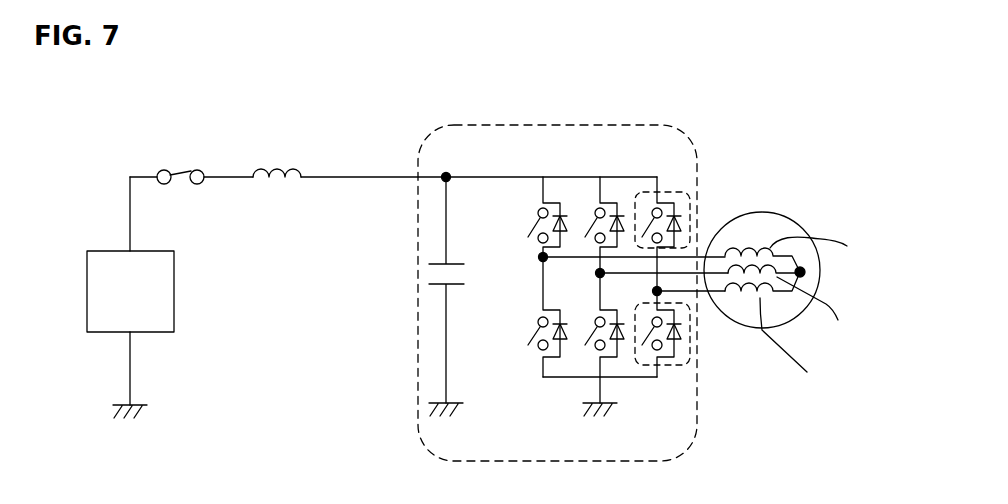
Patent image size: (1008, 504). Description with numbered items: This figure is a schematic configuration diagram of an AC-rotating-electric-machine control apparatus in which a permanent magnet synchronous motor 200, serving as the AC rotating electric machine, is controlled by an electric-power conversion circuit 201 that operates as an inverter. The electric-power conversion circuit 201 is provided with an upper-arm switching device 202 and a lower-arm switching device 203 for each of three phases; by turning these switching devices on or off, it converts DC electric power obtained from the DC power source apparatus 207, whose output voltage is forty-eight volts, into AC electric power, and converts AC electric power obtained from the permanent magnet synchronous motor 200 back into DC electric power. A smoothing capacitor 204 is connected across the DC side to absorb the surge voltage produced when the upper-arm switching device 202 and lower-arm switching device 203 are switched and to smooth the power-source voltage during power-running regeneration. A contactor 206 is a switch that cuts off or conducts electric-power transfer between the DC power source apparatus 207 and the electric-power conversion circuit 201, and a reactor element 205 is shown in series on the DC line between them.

The permanent magnet synchronous motor 200 is at (790, 219).
The electric-power conversion circuit 201 is at (563, 124).
The upper-arm switching device 202 is at (673, 191).
The lower-arm switching device 203 is at (673, 360).
The smoothing capacitor 204 is at (438, 288).
The reactor 205 is at (278, 166).
The contactor 206 is at (180, 169).
The DC power source apparatus 207 is at (107, 250).